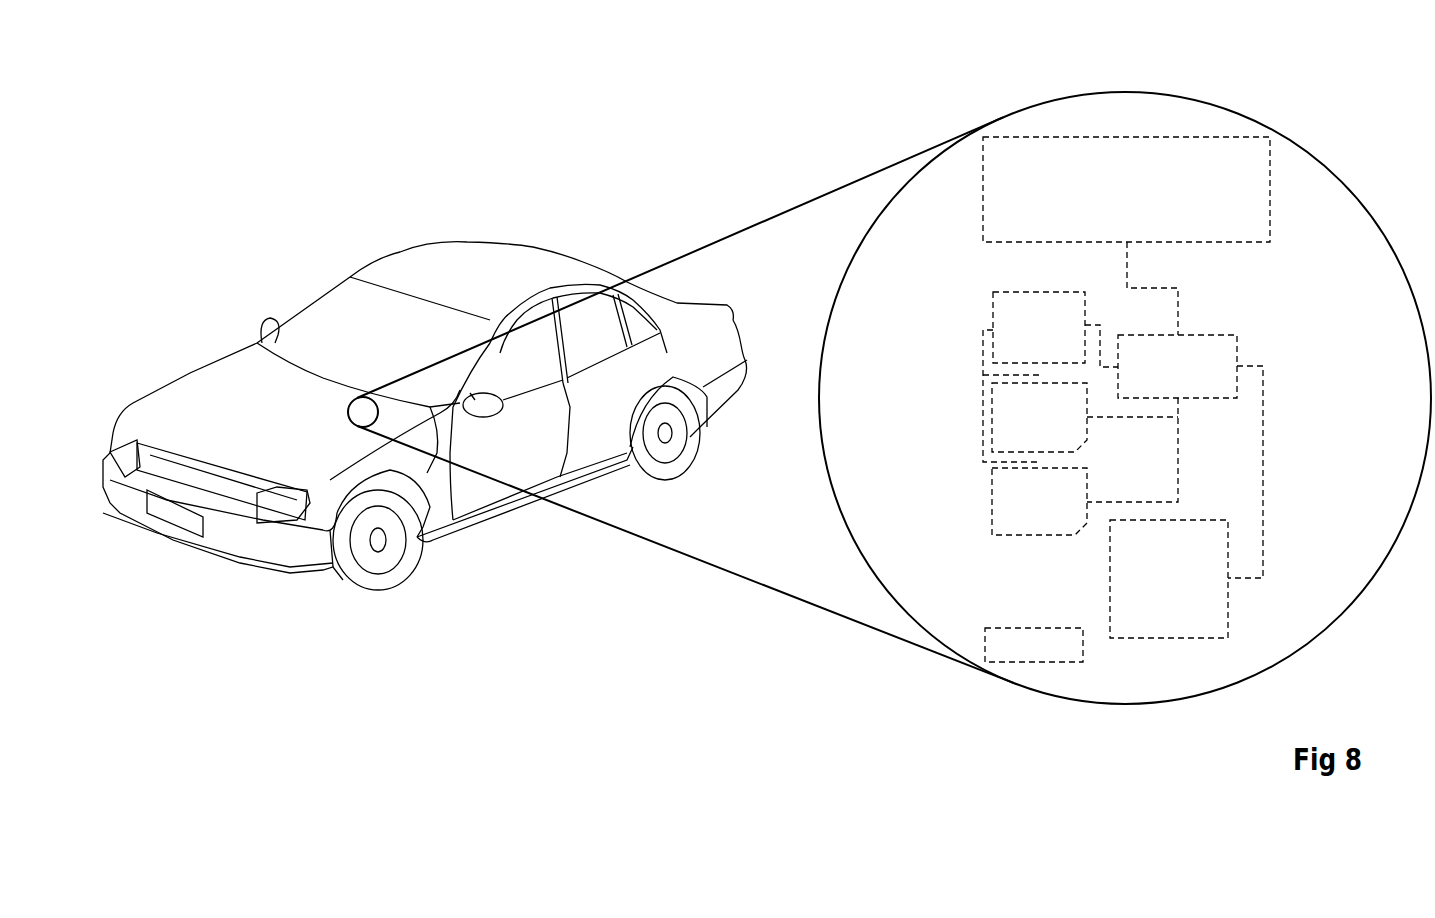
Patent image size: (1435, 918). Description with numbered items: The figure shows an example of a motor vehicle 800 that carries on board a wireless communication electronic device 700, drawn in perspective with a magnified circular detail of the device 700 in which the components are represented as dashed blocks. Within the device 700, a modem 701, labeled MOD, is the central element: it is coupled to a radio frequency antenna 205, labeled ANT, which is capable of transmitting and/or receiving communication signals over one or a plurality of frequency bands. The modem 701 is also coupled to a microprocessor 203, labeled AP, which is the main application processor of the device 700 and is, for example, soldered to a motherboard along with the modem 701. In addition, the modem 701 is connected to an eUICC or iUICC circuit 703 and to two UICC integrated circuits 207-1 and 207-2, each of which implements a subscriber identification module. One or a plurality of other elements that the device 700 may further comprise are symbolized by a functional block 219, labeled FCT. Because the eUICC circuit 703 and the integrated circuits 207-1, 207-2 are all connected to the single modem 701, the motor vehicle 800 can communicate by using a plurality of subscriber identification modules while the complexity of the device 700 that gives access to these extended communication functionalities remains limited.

The motor vehicle 800 is at (485, 172).
The wireless communication electronic device 700 is at (1328, 309).
The antenna 205 is at (983, 214).
The eUICC or iUICC circuit 703 is at (993, 310).
The first UICC integrated circuit 207-1 is at (990, 428).
The second UICC integrated circuit 207-2 is at (990, 503).
The modem 701 is at (1213, 335).
The microprocessor 203 is at (1228, 602).
The functional block 219 is at (1022, 628).